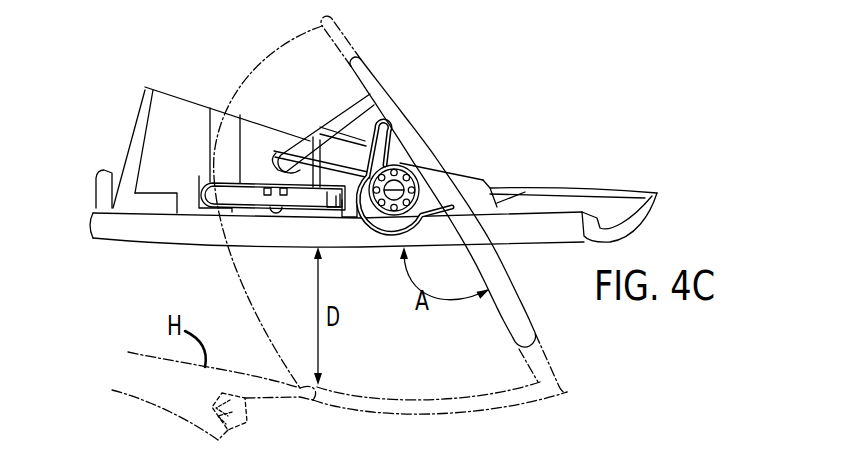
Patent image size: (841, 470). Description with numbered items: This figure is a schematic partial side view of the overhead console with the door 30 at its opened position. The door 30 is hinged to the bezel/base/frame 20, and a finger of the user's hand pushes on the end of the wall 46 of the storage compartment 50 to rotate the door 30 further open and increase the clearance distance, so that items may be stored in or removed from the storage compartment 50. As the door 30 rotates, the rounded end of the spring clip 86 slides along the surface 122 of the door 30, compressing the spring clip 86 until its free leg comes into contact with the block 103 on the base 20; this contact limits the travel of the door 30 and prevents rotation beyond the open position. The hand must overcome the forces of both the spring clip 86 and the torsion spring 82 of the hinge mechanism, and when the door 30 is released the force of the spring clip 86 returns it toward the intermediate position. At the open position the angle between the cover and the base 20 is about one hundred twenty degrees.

The base 20 is at (585, 180).
The door 30 is at (412, 108).
The wall 46 is at (457, 413).
The storage compartment 50 is at (428, 400).
The torsion spring 82 is at (388, 160).
The spring clip 86 is at (252, 212).
The block 103 is at (280, 215).
The surface 122 is at (308, 152).